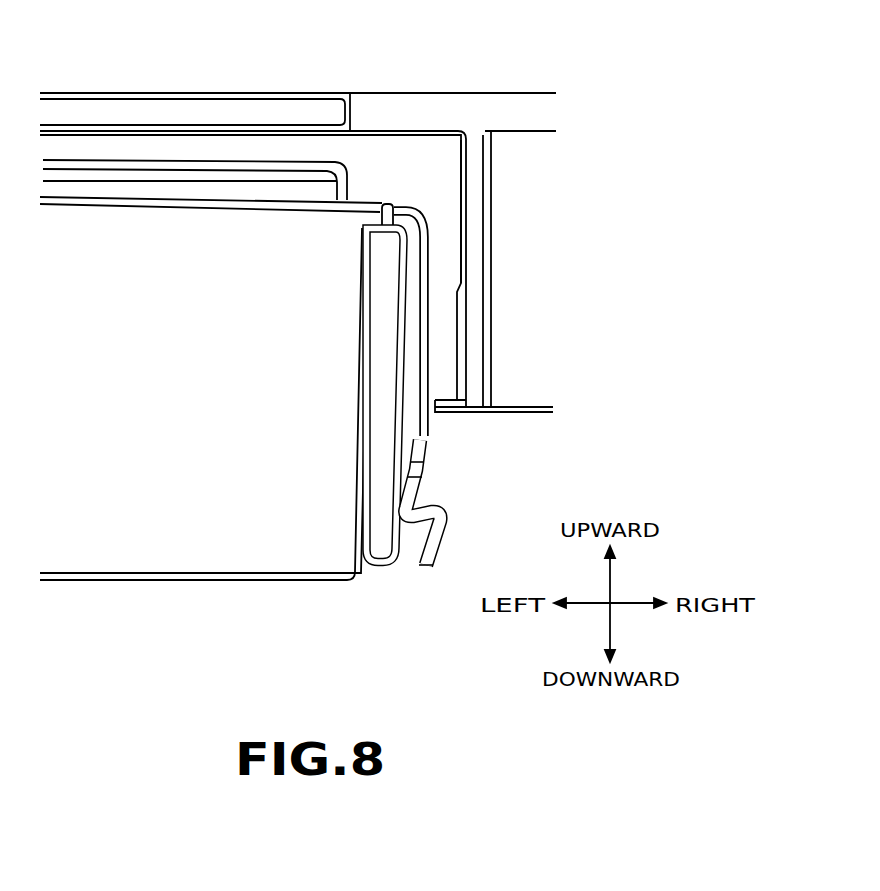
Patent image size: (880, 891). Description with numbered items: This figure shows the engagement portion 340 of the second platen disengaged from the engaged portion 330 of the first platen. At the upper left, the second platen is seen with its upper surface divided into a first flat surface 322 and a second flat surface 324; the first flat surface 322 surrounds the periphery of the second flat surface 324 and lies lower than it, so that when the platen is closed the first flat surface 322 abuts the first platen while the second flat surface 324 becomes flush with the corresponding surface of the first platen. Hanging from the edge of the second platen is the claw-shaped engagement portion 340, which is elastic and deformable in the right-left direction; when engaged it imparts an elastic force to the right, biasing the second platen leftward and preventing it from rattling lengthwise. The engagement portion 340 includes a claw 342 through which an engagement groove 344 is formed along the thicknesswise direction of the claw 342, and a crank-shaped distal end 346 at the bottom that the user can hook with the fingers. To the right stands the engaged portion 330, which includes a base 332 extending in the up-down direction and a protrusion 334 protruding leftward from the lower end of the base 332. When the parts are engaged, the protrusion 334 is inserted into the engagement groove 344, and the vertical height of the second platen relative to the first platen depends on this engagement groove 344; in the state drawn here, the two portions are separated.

The first flat surface 322 is at (358, 203).
The second flat surface 324 is at (232, 160).
The engaged portion 330 is at (527, 294).
The base 332 is at (478, 287).
The protrusion 334 is at (442, 403).
The engagement portion 340 is at (420, 222).
The claw 342 is at (425, 248).
The engagement groove 344 is at (425, 480).
The crank-shaped distal end 346 is at (421, 578).